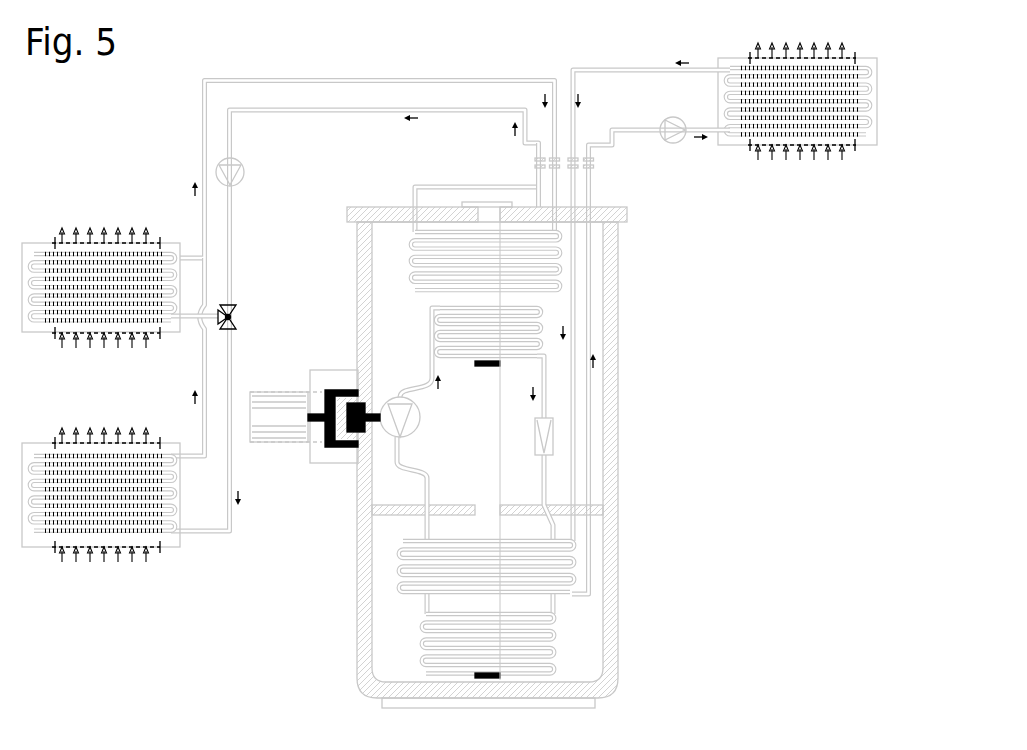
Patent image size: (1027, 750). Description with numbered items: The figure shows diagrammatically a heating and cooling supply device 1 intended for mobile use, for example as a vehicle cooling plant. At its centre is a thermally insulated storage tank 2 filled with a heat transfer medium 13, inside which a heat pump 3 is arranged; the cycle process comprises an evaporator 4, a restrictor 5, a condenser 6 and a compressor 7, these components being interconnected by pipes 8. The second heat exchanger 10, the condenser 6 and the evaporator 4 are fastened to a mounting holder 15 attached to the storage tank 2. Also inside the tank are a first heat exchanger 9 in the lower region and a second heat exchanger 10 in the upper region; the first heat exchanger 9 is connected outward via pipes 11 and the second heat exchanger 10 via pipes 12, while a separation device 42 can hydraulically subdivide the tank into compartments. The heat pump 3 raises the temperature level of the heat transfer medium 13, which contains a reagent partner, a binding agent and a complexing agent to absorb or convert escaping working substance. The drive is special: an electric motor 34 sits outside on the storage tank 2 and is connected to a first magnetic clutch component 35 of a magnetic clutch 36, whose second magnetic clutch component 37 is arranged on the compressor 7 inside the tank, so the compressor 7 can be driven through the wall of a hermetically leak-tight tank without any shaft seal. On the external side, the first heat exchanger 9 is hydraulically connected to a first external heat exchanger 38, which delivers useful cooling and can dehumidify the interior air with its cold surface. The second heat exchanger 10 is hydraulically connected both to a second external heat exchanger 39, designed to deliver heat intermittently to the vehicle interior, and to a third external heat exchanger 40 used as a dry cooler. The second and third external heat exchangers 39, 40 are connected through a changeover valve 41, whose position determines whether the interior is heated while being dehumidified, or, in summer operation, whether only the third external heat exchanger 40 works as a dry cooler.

The heating and cooling supply device 1 is at (523, 58).
The storage tank 2 is at (618, 243).
The heat pump 3 is at (566, 470).
The evaporator 4 is at (548, 645).
The restrictor 5 is at (551, 432).
The condenser 6 is at (537, 322).
The compressor 7 is at (396, 440).
The pipes 8 is at (546, 385).
The first heat exchanger 9 is at (559, 586).
The second heat exchanger 10 is at (548, 277).
The pipes 11 is at (588, 559).
The pipes 12 is at (556, 175).
The heat transfer medium 13 is at (366, 700).
The mounting holder 15 is at (485, 215).
The electric motor 34 is at (288, 420).
The first magnetic clutch component 35 is at (328, 448).
The magnetic clutch 36 is at (284, 514).
The second magnetic clutch component 37 is at (347, 470).
The first external heat exchanger 38 is at (718, 338).
The second external heat exchanger 39 is at (127, 307).
The third external heat exchanger 40 is at (140, 520).
The changeover valve 41 is at (225, 323).
The separation device 42 is at (588, 509).